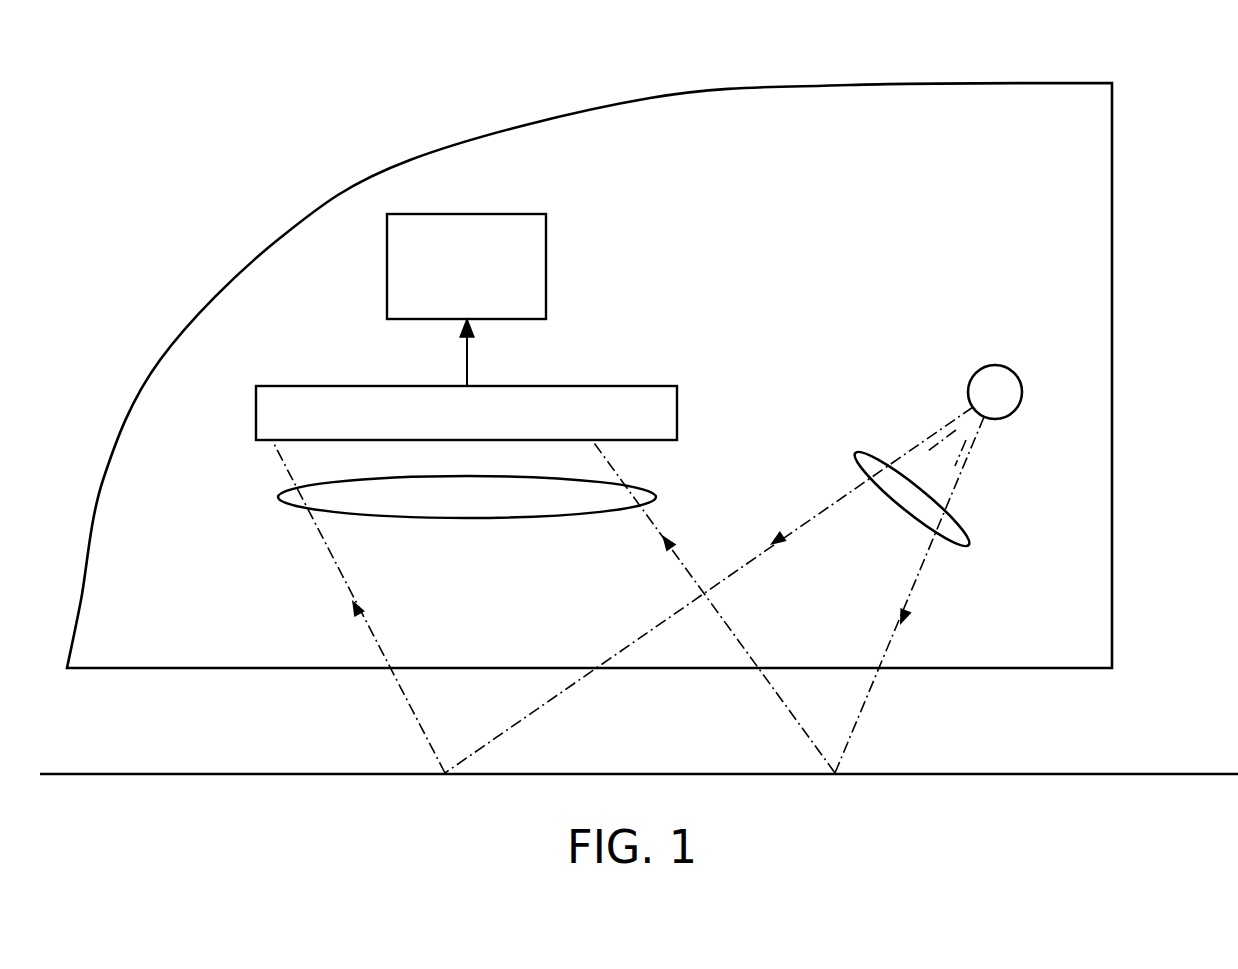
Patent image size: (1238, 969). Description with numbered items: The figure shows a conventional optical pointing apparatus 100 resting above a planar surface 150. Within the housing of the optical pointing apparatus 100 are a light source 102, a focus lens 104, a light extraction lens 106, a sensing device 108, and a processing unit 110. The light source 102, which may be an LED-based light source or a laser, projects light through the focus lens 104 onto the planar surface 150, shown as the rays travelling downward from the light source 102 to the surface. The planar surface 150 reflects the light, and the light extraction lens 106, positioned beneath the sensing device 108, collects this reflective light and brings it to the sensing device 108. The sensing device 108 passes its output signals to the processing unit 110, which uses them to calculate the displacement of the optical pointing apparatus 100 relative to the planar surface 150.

The optical pointing apparatus 100 is at (1113, 428).
The light source 102 is at (995, 365).
The focus lens 104 is at (968, 532).
The light extraction lens 106 is at (278, 494).
The sensing device 108 is at (678, 410).
The processing unit 110 is at (547, 266).
The planar surface 150 is at (1165, 773).